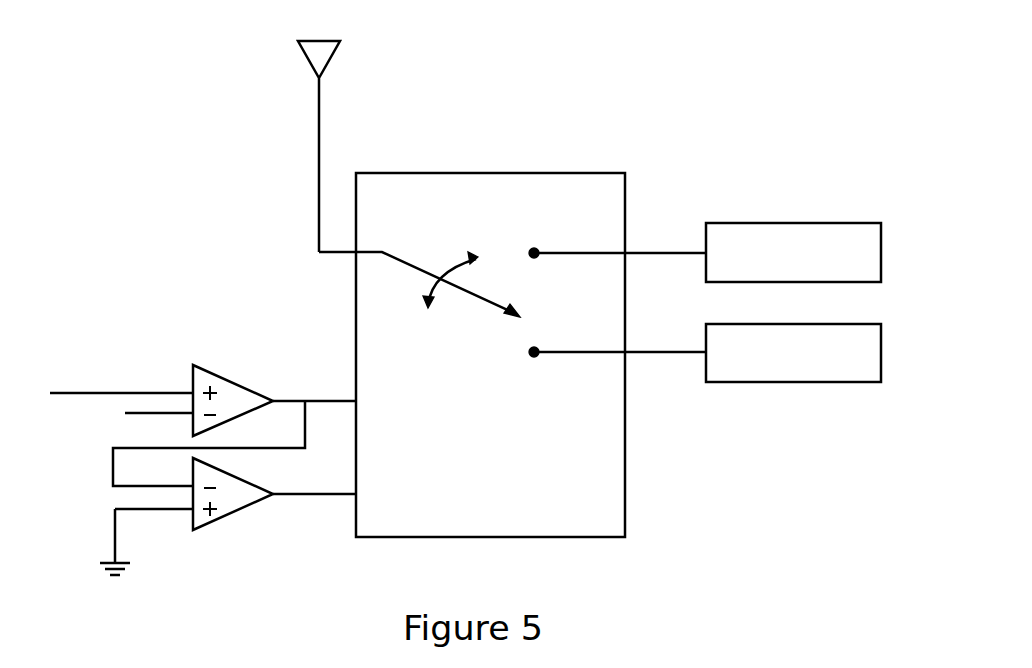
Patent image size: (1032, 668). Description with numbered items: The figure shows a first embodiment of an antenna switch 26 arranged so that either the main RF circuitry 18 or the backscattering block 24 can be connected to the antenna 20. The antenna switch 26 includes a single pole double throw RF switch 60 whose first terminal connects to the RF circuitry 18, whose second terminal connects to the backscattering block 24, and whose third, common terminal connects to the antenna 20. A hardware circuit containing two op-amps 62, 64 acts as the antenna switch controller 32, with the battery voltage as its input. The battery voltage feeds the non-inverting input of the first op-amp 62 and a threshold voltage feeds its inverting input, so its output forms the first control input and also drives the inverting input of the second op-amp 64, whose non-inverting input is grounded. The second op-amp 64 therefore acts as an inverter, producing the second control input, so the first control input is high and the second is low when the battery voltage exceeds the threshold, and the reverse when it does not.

The antenna 20 is at (340, 41).
The single pole double throw RF switch 60 is at (443, 214).
The antenna switch 26 is at (600, 172).
The main RF circuitry 18 is at (866, 223).
The backscattering block 24 is at (866, 324).
The antenna switch controller 32 is at (187, 405).
The first op-amp 62 is at (218, 375).
The second op-amp 64 is at (233, 513).